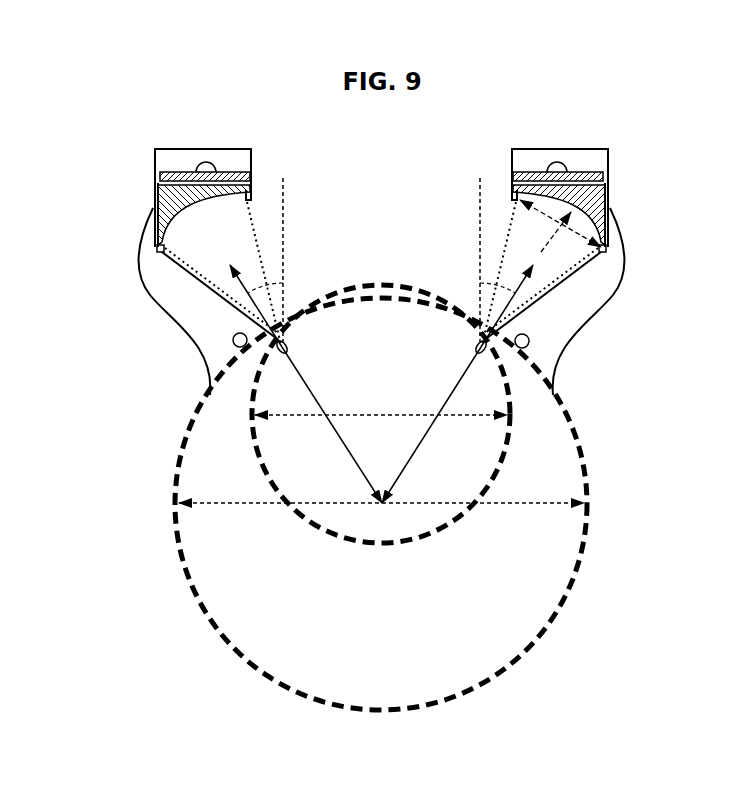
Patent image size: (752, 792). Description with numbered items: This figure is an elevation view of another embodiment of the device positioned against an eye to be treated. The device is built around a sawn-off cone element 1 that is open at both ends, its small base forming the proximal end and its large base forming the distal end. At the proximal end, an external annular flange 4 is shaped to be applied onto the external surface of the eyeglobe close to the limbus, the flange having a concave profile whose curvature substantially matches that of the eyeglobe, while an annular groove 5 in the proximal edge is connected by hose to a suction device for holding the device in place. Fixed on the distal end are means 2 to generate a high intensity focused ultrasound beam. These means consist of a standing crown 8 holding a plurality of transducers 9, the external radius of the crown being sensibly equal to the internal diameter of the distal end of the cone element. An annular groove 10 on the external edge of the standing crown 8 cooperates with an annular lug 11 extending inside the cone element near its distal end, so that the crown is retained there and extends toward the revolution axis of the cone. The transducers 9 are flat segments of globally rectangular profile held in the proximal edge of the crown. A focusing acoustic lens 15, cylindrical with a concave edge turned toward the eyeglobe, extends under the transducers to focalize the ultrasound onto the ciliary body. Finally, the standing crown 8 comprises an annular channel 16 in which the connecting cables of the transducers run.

The sawn-off cone element 1 is at (128, 324).
The means to generate high intensity focused ultrasound beam 2 is at (627, 164).
The external annular flange 4 is at (556, 372).
The annular groove 5 is at (530, 343).
The standing crown 8 is at (182, 146).
The transducers 9 is at (229, 171).
The annular groove 10 is at (158, 246).
The annular lug 11 is at (606, 249).
The focusing acoustic lens 15 is at (163, 193).
The annular channel 16 is at (206, 162).